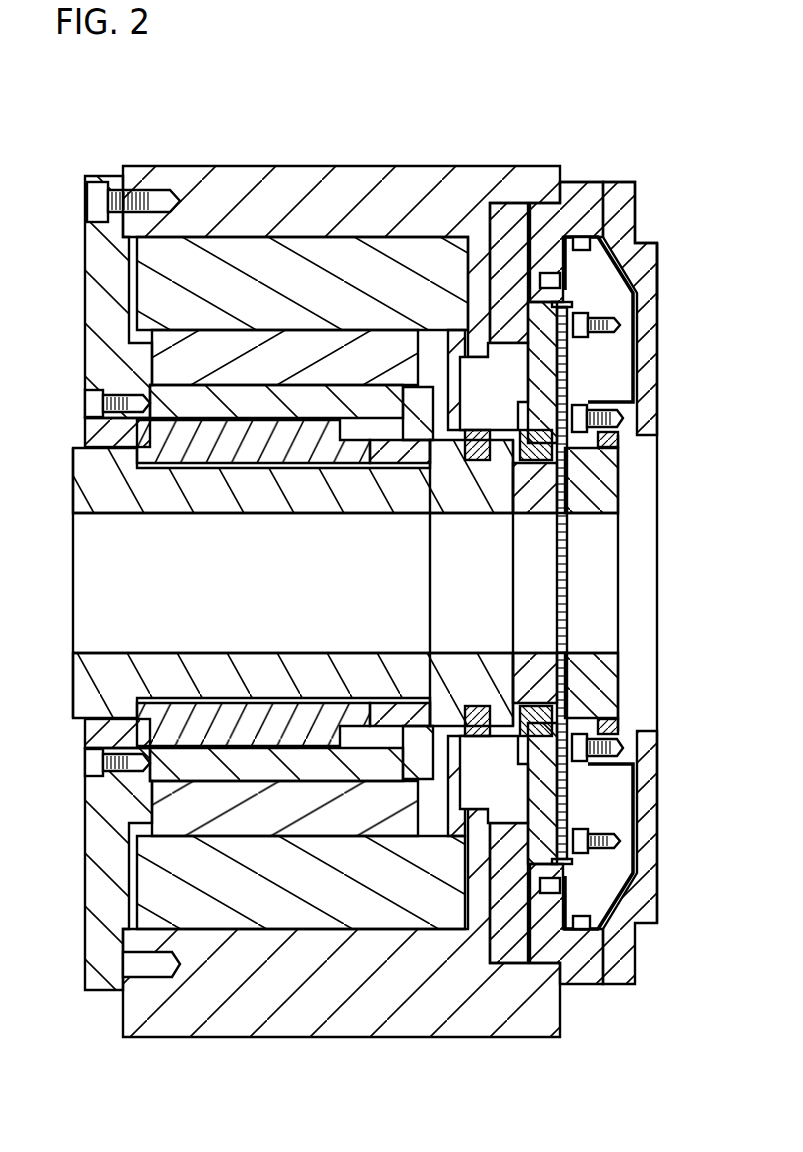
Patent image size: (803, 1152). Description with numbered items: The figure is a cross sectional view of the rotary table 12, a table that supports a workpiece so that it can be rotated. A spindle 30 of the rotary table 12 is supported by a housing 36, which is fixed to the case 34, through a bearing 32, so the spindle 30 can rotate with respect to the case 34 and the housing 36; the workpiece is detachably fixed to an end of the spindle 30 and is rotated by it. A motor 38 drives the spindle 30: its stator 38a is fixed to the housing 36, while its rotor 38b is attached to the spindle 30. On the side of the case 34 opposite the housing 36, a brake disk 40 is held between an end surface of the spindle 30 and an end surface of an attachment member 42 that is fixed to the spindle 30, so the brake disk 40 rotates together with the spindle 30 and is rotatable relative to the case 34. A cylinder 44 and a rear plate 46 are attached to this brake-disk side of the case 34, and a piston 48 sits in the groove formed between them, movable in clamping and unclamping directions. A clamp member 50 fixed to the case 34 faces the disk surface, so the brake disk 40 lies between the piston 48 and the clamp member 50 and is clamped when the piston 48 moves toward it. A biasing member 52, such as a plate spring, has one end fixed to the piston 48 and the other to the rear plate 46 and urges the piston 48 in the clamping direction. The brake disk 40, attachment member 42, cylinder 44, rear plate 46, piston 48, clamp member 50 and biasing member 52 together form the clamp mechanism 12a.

The rotary table 12 is at (369, 547).
The clamp mechanism 12a is at (650, 190).
The spindle 30 is at (95, 472).
The bearing 32 is at (180, 717).
The case 34 is at (357, 180).
The housing 36 is at (95, 268).
The motor 38 is at (302, 499).
The stator 38a is at (242, 258).
The rotor 38b is at (297, 345).
The brake disk 40 is at (565, 473).
The attachment member 42 is at (597, 494).
The cylinder 44 is at (578, 200).
The rear plate 46 is at (648, 300).
The piston 48 is at (648, 263).
The clamp member 50 is at (545, 383).
The biasing member 52 is at (617, 345).